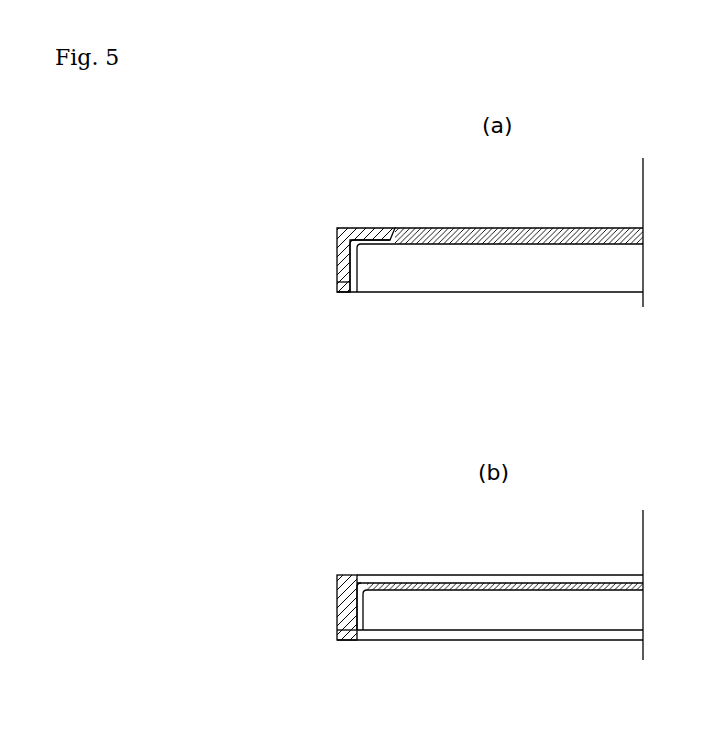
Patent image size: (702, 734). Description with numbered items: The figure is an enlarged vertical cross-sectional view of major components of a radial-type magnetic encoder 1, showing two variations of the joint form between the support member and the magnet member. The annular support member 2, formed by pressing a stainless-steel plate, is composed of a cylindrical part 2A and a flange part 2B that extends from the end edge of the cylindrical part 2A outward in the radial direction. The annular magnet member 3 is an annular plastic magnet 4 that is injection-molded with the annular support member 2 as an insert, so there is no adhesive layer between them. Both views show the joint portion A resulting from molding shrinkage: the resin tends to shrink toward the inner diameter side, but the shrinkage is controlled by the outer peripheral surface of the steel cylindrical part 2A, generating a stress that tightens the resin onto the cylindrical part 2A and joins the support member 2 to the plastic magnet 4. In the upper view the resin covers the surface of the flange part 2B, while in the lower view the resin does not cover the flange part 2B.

The magnetic encoder 1 is at (541, 227).
The annular support member 2 is at (496, 466).
The cylindrical part 2A is at (357, 278).
The flange part 2B is at (373, 246).
The annular magnet member 3 is at (337, 250).
The plastic magnet 4 is at (310, 434).
The joint portion A is at (334, 283).